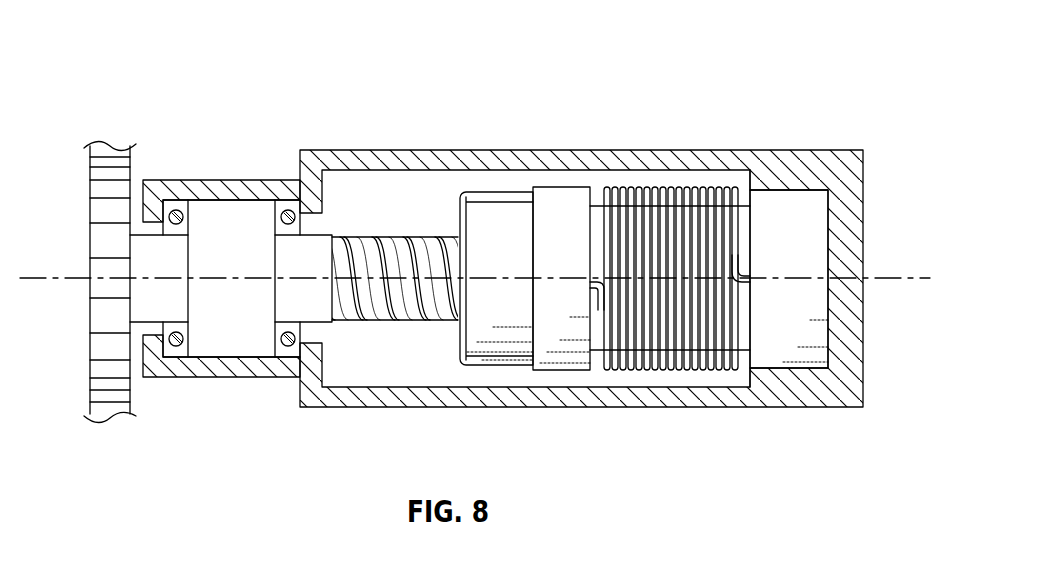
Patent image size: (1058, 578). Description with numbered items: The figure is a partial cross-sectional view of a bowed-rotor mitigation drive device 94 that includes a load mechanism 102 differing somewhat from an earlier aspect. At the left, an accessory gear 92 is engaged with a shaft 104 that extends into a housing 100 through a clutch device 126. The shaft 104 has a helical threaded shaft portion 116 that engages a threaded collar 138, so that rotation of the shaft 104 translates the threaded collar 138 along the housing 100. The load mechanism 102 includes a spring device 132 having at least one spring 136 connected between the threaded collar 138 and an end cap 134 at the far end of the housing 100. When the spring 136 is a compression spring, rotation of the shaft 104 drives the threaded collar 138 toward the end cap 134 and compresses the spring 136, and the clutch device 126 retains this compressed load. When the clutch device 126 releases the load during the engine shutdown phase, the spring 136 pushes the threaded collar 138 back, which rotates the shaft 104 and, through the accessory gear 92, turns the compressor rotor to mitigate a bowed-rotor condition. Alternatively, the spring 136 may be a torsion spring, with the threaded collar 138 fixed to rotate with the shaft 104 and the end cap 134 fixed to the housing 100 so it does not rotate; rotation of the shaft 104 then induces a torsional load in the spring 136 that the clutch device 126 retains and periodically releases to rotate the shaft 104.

The bowed-rotor mitigation drive device 94 is at (551, 104).
The accessory gear 92 is at (100, 348).
The clutch device 126 is at (233, 340).
The housing 100 is at (462, 400).
The shaft 104 is at (357, 332).
The helical threaded shaft portion 116 is at (415, 332).
The threaded collar 138 is at (578, 347).
The spring device 132 is at (657, 178).
The load mechanism 102 is at (727, 178).
The spring 136 is at (688, 365).
The end cap 134 is at (805, 242).